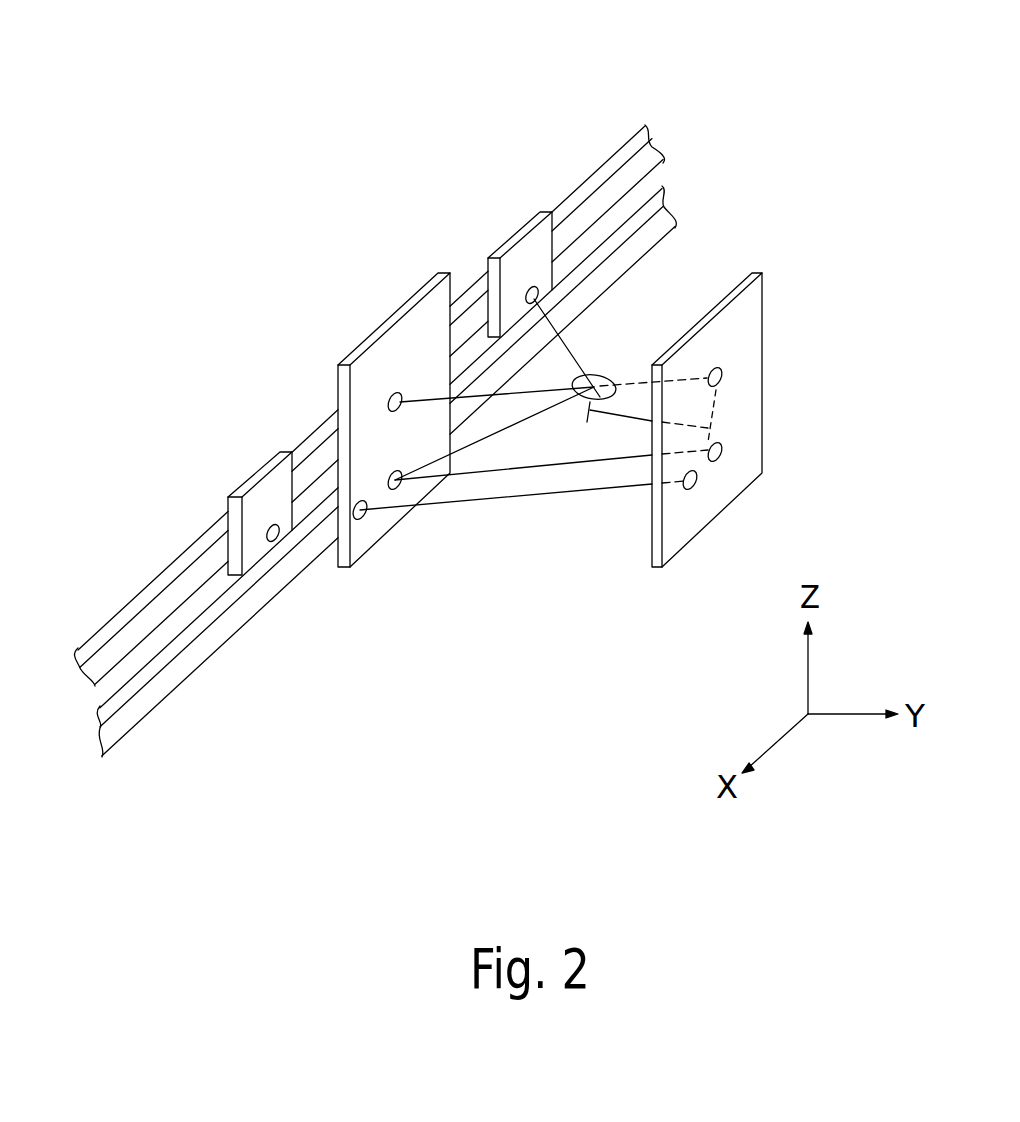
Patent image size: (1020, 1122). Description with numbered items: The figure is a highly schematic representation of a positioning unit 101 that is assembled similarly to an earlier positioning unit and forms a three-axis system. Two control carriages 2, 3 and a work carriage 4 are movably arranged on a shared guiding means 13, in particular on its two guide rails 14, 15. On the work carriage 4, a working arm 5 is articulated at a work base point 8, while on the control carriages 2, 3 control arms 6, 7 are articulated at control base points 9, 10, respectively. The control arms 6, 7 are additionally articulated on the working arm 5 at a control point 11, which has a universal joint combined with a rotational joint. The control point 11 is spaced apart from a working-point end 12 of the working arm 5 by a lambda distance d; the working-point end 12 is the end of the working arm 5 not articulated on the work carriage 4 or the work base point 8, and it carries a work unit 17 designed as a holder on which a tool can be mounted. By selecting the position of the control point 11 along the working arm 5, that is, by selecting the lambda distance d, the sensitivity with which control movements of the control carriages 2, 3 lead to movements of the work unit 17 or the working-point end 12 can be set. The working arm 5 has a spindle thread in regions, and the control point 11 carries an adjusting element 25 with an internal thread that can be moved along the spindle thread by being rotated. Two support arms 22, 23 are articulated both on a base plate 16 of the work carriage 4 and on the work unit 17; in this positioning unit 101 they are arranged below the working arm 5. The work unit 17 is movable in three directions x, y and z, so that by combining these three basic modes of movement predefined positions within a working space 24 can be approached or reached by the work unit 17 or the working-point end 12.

The positioning unit 101 is at (748, 135).
The control carriage 2 is at (527, 248).
The control carriage 3 is at (268, 485).
The work carriage 4 is at (426, 312).
The working arm 5 is at (545, 387).
The control arm 6 is at (612, 370).
The control arm 7 is at (308, 493).
The work base point 8 is at (397, 360).
The control base point 9 is at (532, 286).
The control base point 10 is at (272, 524).
The control point 11 is at (725, 352).
The working-point end 12 is at (722, 377).
The guiding means 13 is at (132, 700).
The guide rail 14 is at (139, 630).
The guide rail 15 is at (208, 647).
The base plate 16 is at (363, 375).
The work unit 17 is at (738, 355).
The support arm 22 is at (450, 503).
The support arm 23 is at (524, 492).
The working space 24 is at (536, 712).
The adjusting element 25 is at (583, 403).
The lambda distance d is at (626, 414).